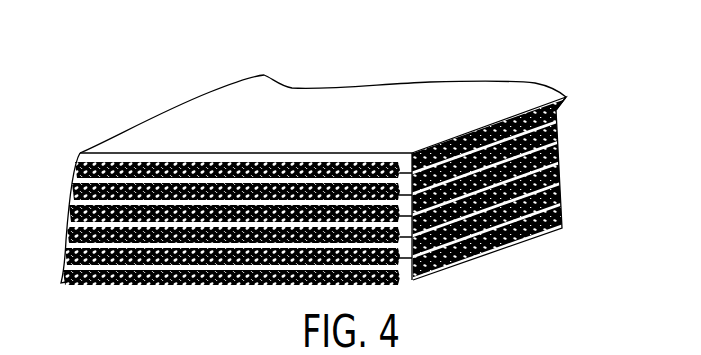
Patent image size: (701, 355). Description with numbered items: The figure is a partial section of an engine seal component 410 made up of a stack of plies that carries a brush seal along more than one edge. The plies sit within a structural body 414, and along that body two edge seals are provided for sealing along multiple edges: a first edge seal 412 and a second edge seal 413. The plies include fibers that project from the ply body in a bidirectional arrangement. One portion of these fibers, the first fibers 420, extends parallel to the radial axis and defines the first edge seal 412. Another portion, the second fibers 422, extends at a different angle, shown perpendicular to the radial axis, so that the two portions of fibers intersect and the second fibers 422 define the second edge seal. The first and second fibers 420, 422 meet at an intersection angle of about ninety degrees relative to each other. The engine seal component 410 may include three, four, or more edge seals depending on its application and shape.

The engine seal component 410 is at (316, 143).
The first edge seal 412 is at (85, 162).
The second edge seal 413 is at (552, 108).
The structural body 414 is at (335, 105).
The first fibers 420 is at (150, 165).
The second fibers 422 is at (500, 253).